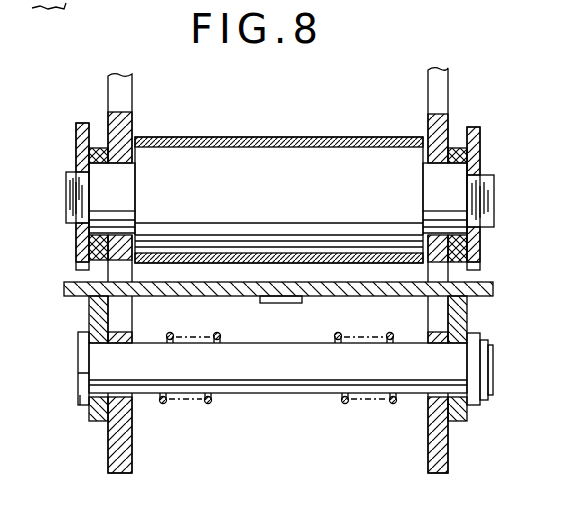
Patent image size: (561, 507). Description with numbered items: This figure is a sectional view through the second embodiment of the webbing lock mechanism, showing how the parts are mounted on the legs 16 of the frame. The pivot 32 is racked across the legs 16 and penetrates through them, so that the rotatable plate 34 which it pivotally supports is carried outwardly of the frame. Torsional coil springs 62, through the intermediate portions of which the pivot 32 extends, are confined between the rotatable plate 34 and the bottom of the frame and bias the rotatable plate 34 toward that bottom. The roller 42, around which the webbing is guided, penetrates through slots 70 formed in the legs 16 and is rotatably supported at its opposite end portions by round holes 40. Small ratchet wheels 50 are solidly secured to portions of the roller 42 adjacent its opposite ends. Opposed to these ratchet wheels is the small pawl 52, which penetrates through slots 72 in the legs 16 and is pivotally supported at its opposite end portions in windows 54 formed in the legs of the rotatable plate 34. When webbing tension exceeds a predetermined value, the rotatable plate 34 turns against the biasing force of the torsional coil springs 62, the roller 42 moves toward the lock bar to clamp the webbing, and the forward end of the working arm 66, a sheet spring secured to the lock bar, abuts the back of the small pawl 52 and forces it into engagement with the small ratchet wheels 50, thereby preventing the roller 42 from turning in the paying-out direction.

The legs 16 is at (132, 100).
The pivot 32 is at (290, 380).
The rotatable plate 34 is at (98, 421).
The round holes 40 is at (96, 165).
The roller 42 is at (270, 148).
The small ratchet wheels 50 is at (474, 127).
The small pawl 52 is at (82, 123).
The windows 54 is at (80, 292).
The torsional coil springs 62 is at (210, 405).
The working arm 66 is at (277, 303).
The slot 70 is at (128, 163).
The slot 72 is at (116, 336).